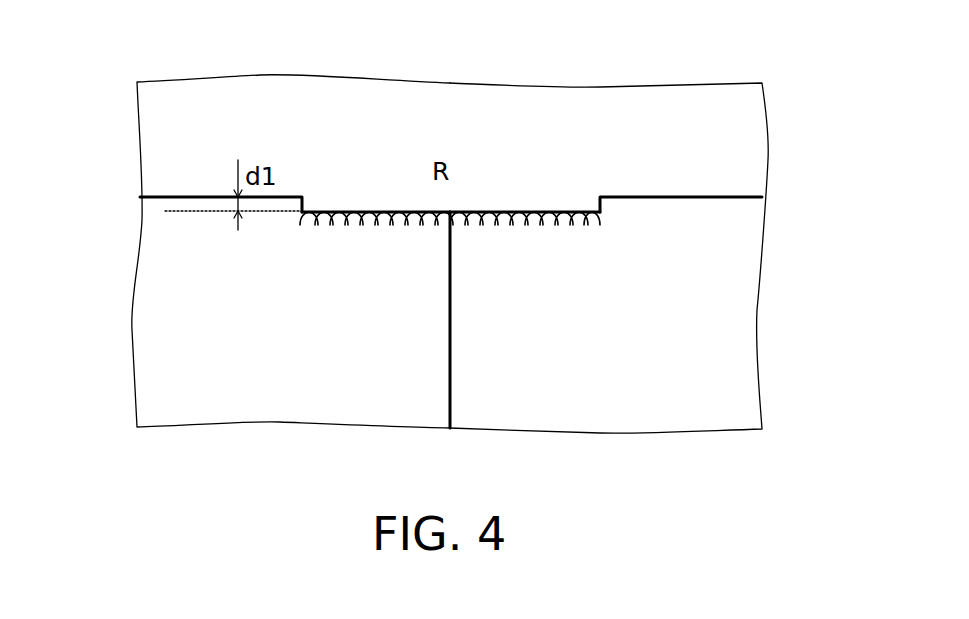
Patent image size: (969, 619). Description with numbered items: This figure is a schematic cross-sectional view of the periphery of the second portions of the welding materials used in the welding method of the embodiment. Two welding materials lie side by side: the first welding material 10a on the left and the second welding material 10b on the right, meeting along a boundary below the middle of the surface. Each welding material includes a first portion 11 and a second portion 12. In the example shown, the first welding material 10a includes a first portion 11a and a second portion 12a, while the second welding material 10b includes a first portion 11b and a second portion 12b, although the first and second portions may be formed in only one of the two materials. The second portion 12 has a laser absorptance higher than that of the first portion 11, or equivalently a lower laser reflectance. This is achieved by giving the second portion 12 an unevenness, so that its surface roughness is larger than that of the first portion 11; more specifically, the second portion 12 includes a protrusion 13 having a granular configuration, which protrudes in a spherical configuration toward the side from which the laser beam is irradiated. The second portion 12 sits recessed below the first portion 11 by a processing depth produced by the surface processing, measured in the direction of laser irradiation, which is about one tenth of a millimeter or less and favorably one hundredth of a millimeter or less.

The first welding material 10a is at (167, 312).
The second welding material 10b is at (727, 312).
The first portion 11 is at (459, 111).
The first portion 11a is at (185, 197).
The first portion 11b is at (715, 197).
The second portion 12 is at (451, 111).
The second portion 12a is at (388, 210).
The second portion 12b is at (521, 210).
The protrusion 13 is at (348, 222).